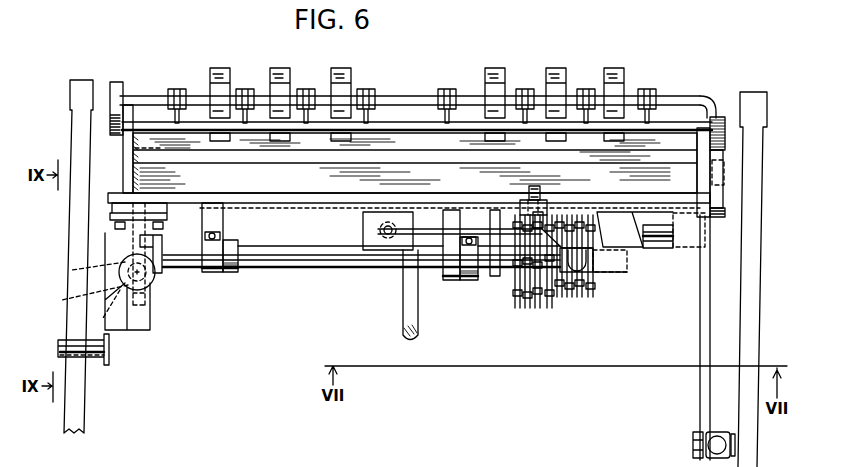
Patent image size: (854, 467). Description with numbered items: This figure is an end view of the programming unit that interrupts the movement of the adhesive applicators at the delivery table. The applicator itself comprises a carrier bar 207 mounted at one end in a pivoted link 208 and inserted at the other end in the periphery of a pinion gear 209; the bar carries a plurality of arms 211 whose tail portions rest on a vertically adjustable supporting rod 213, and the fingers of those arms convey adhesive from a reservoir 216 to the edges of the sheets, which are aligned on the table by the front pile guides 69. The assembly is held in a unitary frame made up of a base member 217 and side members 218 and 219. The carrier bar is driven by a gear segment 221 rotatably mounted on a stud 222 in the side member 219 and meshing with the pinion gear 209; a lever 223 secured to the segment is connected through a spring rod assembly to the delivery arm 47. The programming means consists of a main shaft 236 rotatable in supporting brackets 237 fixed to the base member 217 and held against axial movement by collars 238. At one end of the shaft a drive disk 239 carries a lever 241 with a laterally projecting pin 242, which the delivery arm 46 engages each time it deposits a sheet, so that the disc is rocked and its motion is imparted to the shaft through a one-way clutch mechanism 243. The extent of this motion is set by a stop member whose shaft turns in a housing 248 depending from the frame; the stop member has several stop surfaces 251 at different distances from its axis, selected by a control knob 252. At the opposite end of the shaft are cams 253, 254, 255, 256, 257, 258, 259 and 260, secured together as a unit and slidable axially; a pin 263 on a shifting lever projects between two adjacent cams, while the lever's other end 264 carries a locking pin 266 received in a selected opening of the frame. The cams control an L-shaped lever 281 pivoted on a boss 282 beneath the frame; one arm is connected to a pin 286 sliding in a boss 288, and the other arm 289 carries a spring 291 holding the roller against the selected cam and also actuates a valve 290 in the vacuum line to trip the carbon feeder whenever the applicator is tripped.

The delivery arm 46 is at (79, 252).
The delivery arm 47 is at (752, 266).
The front pile guides 69 is at (548, 73).
The carrier bar 207 is at (668, 103).
The pivoted link 208 is at (118, 84).
The pinion gear 209 is at (718, 116).
The arms 211 is at (444, 112).
The vertically adjustable supporting rod 213 is at (165, 121).
The reservoir 216 is at (236, 150).
The base member 217 is at (283, 195).
The side member 218 is at (128, 165).
The side member 219 is at (712, 192).
The gear segment 221 is at (700, 194).
The stud 222 is at (730, 176).
The lever 223 is at (704, 388).
The main shaft 236 is at (315, 256).
The supporting brackets 237 is at (214, 269).
The collars 238 is at (236, 271).
The drive disk 239 is at (147, 305).
The lever 241 is at (107, 338).
The pin 242 is at (82, 352).
The one-way clutch mechanism 243 is at (158, 258).
The housing 248 is at (139, 323).
The stop surfaces 251 is at (118, 281).
The control knob 252 is at (151, 284).
The cam 253 is at (517, 309).
The cam 254 is at (527, 309).
The cam 255 is at (538, 309).
The cam 256 is at (551, 309).
The cam 257 is at (560, 300).
The cam 258 is at (570, 300).
The cam 259 is at (580, 300).
The cam 260 is at (591, 293).
The pin 263 is at (540, 221).
The other end of the lever 264 is at (520, 205).
The locking pin 266 is at (530, 190).
The L-shaped lever 281 is at (618, 270).
The boss 282 is at (615, 233).
The pin 286 is at (664, 247).
The boss 288 is at (693, 220).
The arm 289 is at (493, 277).
The valve 290 is at (375, 251).
The spring 291 is at (417, 258).